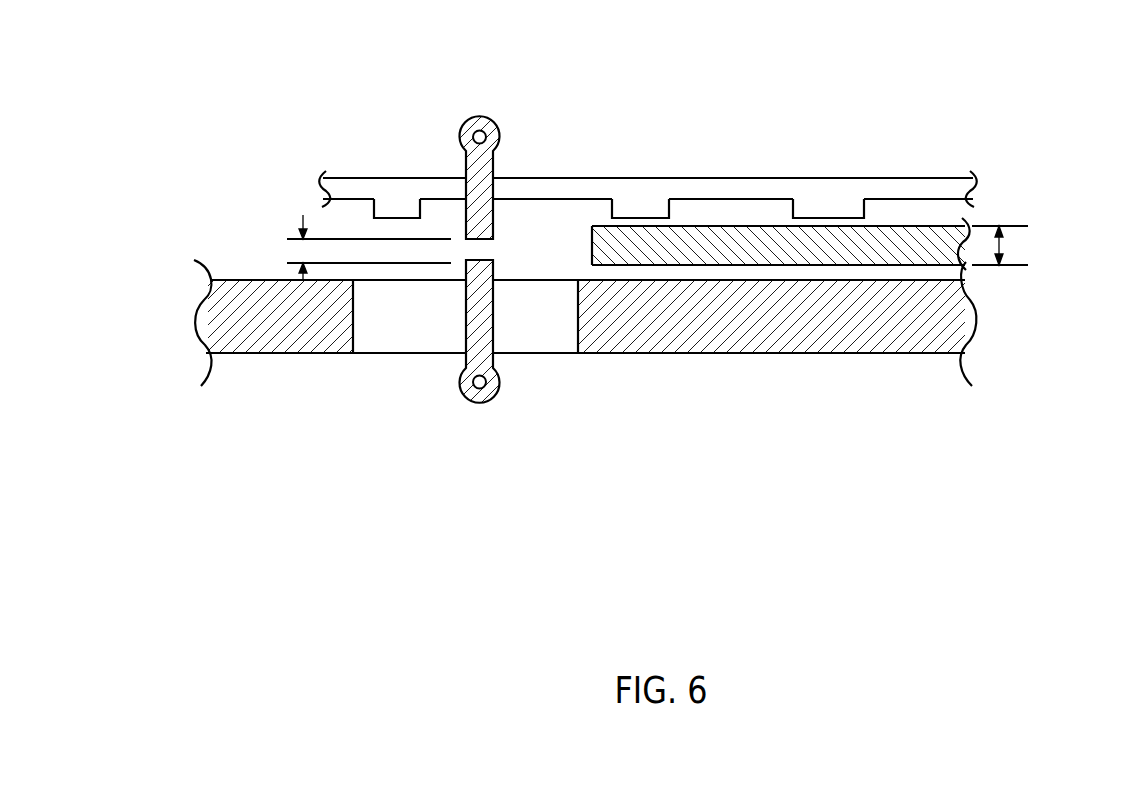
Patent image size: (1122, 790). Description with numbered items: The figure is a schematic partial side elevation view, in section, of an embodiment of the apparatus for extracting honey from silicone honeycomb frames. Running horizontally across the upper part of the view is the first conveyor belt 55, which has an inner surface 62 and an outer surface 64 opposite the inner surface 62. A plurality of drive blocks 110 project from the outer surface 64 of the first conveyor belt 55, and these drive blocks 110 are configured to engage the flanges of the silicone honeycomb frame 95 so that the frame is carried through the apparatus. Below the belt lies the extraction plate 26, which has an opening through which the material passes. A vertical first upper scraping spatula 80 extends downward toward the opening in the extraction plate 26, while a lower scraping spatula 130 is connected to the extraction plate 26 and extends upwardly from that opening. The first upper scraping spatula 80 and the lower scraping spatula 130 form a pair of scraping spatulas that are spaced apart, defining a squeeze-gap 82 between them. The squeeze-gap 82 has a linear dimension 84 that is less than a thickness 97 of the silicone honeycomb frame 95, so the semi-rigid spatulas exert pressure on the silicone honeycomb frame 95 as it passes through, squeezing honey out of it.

The extraction plate 26 is at (277, 345).
The first conveyor belt 55 is at (693, 139).
The inner surface 62 is at (693, 143).
The outer surface 64 is at (937, 200).
The first upper scraping spatula 80 is at (407, 267).
The squeeze-gap 82 is at (498, 254).
The linear dimension 84 is at (300, 233).
The silicone honeycomb frame 95 is at (950, 245).
The thickness 97 is at (1003, 249).
The drive blocks 110 is at (372, 200).
The lower scraping spatula 130 is at (473, 355).